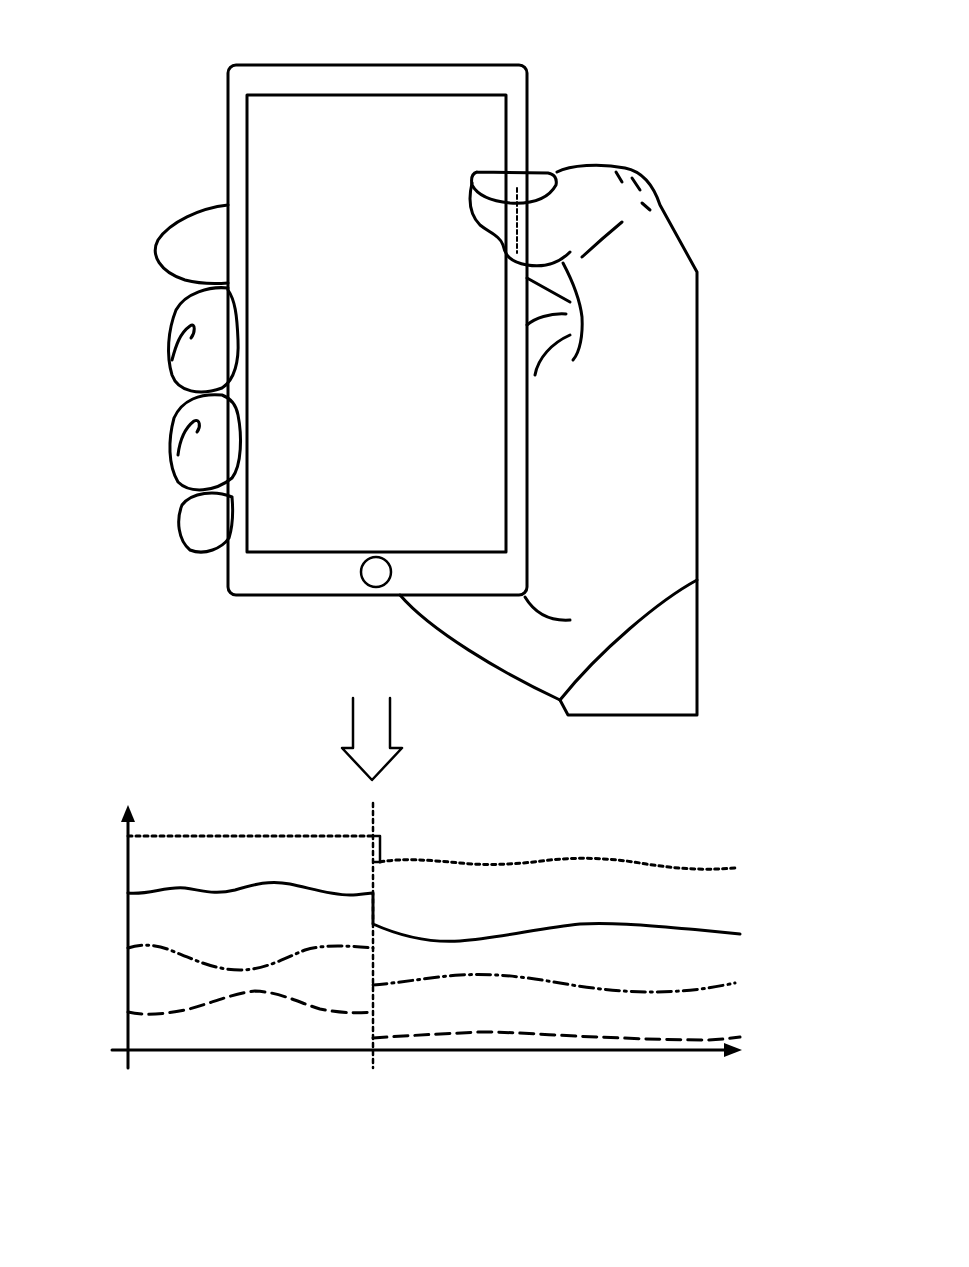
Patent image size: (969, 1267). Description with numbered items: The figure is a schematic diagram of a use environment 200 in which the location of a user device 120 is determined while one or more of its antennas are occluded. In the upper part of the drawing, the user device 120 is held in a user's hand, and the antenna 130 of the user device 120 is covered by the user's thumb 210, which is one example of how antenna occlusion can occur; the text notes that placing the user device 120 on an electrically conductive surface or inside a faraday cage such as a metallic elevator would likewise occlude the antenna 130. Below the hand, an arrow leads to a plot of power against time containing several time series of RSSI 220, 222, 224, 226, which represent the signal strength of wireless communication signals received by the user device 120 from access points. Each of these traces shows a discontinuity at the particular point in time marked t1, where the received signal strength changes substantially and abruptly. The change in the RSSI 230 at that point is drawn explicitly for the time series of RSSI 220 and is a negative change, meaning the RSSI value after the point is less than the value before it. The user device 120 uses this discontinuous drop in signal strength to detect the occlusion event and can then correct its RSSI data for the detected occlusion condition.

The use environment 200 is at (742, 25).
The user device 120 is at (319, 65).
The antenna 130 is at (517, 188).
The thumb 210 is at (540, 238).
The time series of RSSI 220 is at (632, 868).
The time series of RSSI 222 is at (700, 930).
The time series of RSSI 224 is at (712, 988).
The time series of RSSI 226 is at (712, 1040).
The change in the RSSI 230 is at (383, 858).